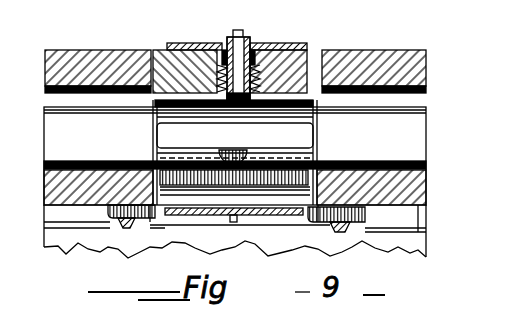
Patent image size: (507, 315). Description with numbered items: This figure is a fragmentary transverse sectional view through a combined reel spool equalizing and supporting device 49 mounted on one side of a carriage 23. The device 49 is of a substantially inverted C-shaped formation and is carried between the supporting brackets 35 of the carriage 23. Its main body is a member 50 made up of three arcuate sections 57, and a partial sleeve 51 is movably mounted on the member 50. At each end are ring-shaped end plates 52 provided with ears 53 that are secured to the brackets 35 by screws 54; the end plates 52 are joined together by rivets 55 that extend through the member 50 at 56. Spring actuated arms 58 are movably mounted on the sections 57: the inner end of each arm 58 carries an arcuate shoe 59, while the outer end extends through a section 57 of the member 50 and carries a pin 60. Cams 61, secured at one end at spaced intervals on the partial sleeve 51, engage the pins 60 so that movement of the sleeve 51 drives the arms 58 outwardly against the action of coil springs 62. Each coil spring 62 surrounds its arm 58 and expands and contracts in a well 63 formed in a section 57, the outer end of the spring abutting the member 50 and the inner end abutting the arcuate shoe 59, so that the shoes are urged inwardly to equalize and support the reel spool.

The carriage 23 is at (68, 34).
The ring-shaped end plate 52 is at (160, 51).
The partial sleeve 51 is at (170, 50).
The arcuate section 57 is at (216, 49).
The spring actuated arm 58 is at (262, 48).
The coil spring 62 is at (302, 52).
The cam 61 is at (212, 50).
The pin 60 is at (252, 48).
The combined reel spool equalizing and supporting device 49 is at (312, 45).
The well 63 is at (336, 62).
The member 50 is at (152, 97).
The arcuate shoe 59 is at (323, 117).
The rivet passage in member 56 is at (323, 161).
The supporting bracket 35 is at (70, 205).
The ear 53 is at (110, 228).
The screw 54 is at (140, 226).
The rivet 55 is at (213, 205).